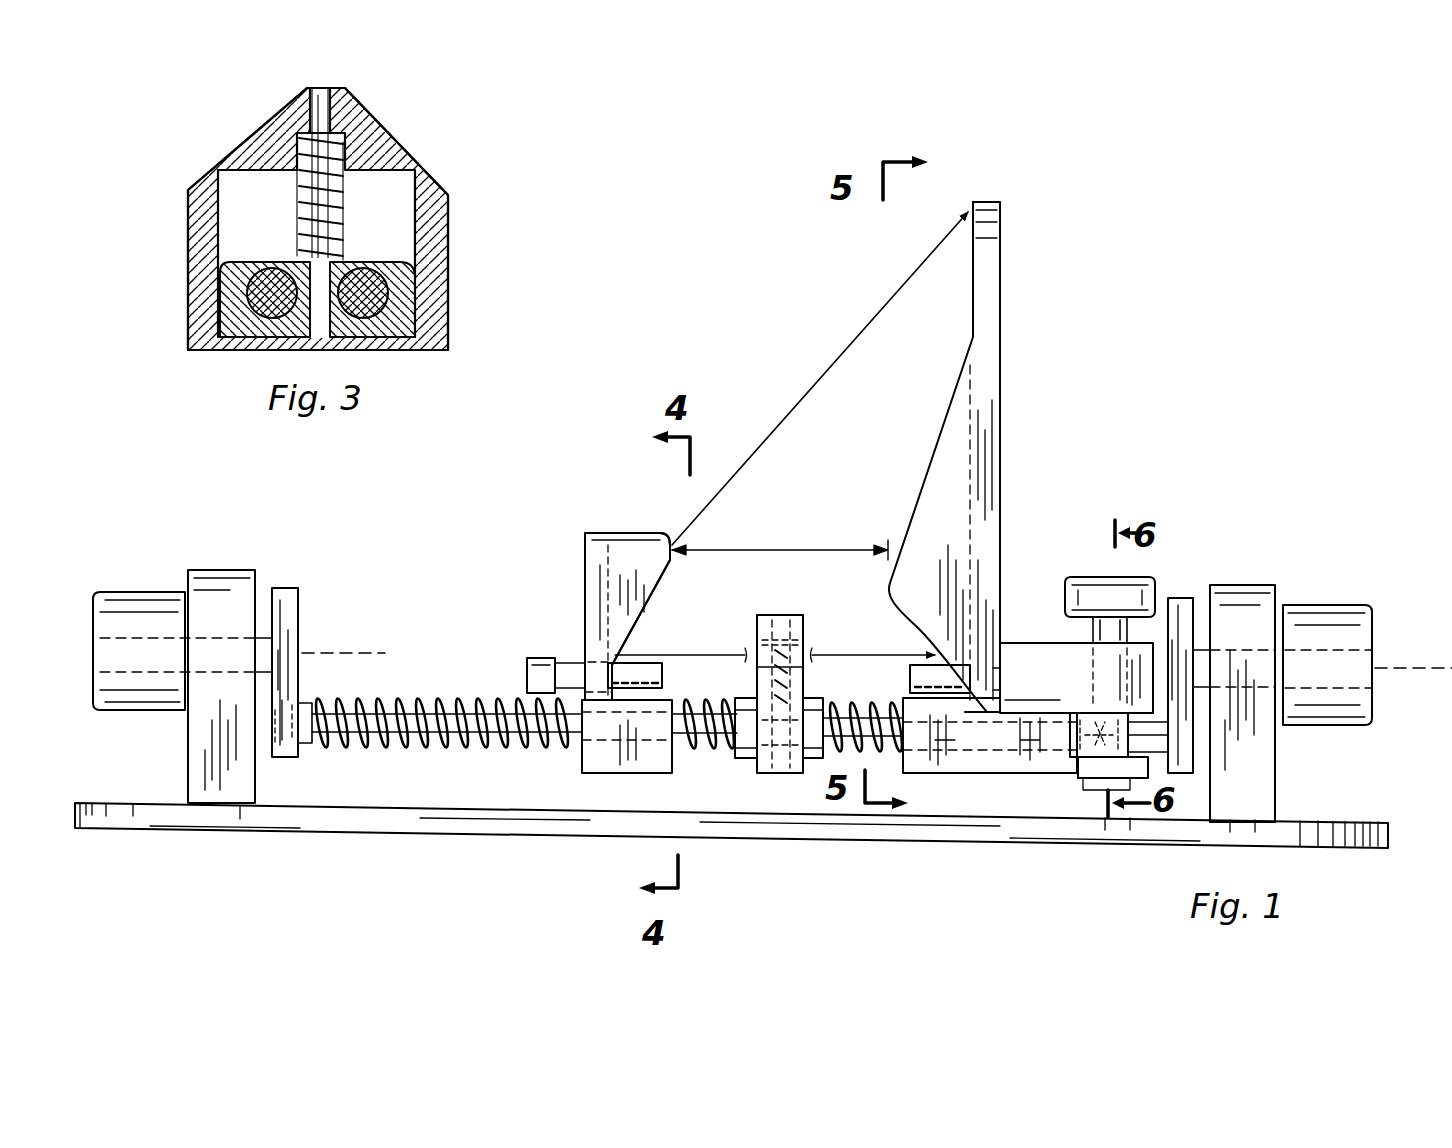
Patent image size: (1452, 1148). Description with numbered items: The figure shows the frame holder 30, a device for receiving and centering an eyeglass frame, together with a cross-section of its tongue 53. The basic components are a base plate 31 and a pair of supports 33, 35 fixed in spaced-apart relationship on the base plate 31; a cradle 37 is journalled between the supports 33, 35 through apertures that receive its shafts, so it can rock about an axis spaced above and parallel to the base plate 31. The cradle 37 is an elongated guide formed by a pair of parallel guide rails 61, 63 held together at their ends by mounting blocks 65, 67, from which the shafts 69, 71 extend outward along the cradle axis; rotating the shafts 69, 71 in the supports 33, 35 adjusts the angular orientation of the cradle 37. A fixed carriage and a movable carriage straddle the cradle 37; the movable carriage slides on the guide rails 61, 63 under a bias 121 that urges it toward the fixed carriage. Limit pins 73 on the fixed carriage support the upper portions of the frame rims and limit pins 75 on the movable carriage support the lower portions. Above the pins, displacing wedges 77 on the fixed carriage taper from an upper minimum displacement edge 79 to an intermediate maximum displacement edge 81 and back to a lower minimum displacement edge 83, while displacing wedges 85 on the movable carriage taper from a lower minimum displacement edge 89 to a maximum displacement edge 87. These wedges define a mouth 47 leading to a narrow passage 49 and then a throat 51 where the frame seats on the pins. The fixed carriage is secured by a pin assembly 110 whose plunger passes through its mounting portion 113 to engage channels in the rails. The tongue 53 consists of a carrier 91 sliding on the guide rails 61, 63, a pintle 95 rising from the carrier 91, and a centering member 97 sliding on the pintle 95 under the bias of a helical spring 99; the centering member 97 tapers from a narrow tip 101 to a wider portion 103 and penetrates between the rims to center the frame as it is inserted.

In FIG. 1, the frame holder 30 is at (1132, 428).
In FIG. 1, the base plate 31 is at (1022, 832).
In FIG. 1, the support 33 is at (205, 572).
In FIG. 1, the support 35 is at (1242, 590).
In FIG. 1, the cradle 37 is at (608, 663).
In FIG. 1, the mouth portion 47 is at (790, 415).
In FIG. 1, the narrow passage 49 is at (878, 548).
In FIG. 1, the throat 51 is at (628, 660).
In FIG. 1, the tongue 53 is at (810, 630).
In FIG. 3, the guide rail 61 is at (245, 340).
In FIG. 3, the guide rail 63 is at (415, 328).
In FIG. 1, the guide rail 63 is at (450, 750).
In FIG. 1, the mounting block 65 is at (290, 600).
In FIG. 1, the mounting block 67 is at (1182, 640).
In FIG. 1, the shaft 69 is at (275, 640).
In FIG. 1, the shaft 71 is at (1205, 690).
In FIG. 1, the limit pins 73 is at (1005, 675).
In FIG. 1, the limit pins 75 is at (532, 675).
In FIG. 1, the displacing wedges 77 is at (952, 477).
In FIG. 1, the upper minimum displacement edge 79 is at (973, 325).
In FIG. 1, the intermediate maximum displacement edge 81 is at (893, 583).
In FIG. 1, the lower minimum displacement edge 83 is at (1000, 705).
In FIG. 1, the displacing wedges 85 is at (612, 598).
In FIG. 1, the intermediate maximum displacement edge 87 is at (678, 543).
In FIG. 1, the lower minimum displacement edge 89 is at (612, 660).
In FIG. 3, the carrier 91 is at (395, 288).
In FIG. 3, the pintle 95 is at (345, 92).
In FIG. 3, the centering member 97 is at (435, 235).
In FIG. 3, the helical spring 99 is at (350, 215).
In FIG. 3, the narrow tip 101 is at (305, 88).
In FIG. 3, the wider portion 103 is at (198, 182).
In FIG. 1, the pin assembly 110 is at (1150, 565).
In FIG. 1, the mounting portion 113 is at (1072, 660).
In FIG. 1, the bias 121 is at (322, 750).